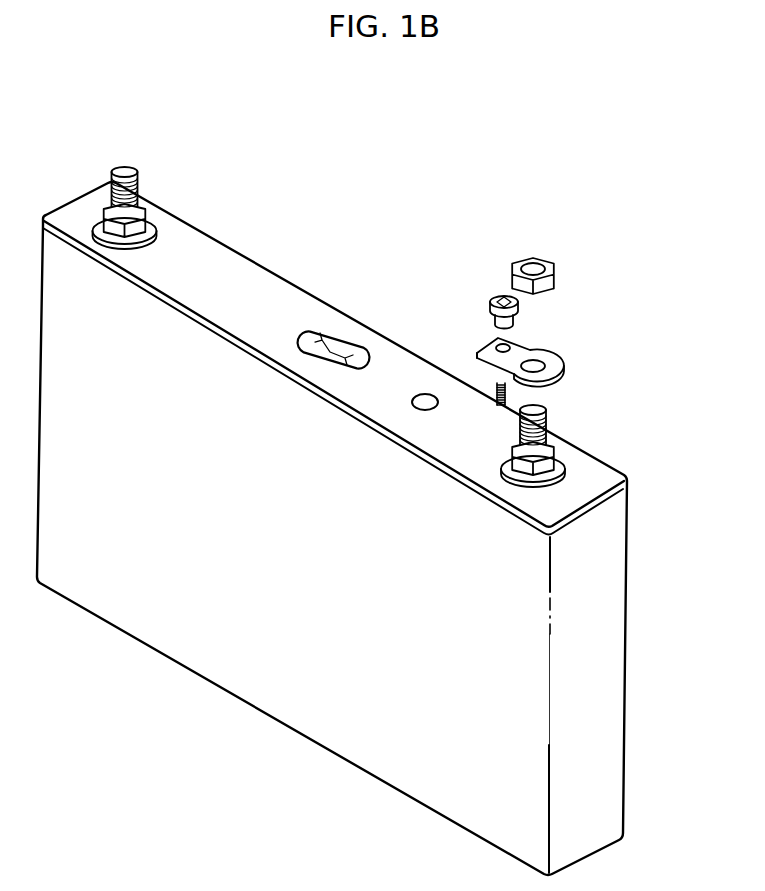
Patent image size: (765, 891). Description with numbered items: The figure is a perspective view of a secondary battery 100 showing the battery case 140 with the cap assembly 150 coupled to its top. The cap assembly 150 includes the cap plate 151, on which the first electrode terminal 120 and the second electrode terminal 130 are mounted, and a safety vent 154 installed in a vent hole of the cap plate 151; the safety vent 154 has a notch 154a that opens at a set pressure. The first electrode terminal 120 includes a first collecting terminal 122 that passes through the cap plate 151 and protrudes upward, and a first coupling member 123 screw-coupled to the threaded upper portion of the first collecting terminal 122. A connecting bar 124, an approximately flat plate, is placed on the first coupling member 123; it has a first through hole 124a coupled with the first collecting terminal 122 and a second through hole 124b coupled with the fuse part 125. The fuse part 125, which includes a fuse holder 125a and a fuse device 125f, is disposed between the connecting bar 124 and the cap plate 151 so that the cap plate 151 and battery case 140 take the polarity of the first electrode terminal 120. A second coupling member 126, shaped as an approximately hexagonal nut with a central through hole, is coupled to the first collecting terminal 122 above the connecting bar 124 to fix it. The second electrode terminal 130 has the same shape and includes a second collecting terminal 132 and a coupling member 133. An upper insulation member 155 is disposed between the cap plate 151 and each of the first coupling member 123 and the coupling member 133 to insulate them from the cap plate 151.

The secondary battery 100 is at (702, 127).
The first electrode terminal 120 is at (505, 437).
The first collecting terminal 122 is at (548, 428).
The first coupling member 123 is at (548, 441).
The connecting bar 124 is at (560, 362).
The first through hole 124a is at (533, 365).
The second through hole 124b is at (505, 345).
The fuse part 125 is at (493, 287).
The fuse holder 125a is at (492, 322).
The fuse device 125f is at (497, 385).
The second coupling member 126 is at (520, 257).
The second electrode terminal 130 is at (131, 170).
The second collecting terminal 132 is at (124, 175).
The coupling member 133 is at (140, 195).
The battery case 140 is at (268, 695).
The cap assembly 150 is at (278, 275).
The cap plate 151 is at (212, 247).
The safety vent 154 is at (323, 331).
The notch 154a is at (335, 347).
The upper insulation member 155 is at (157, 203).